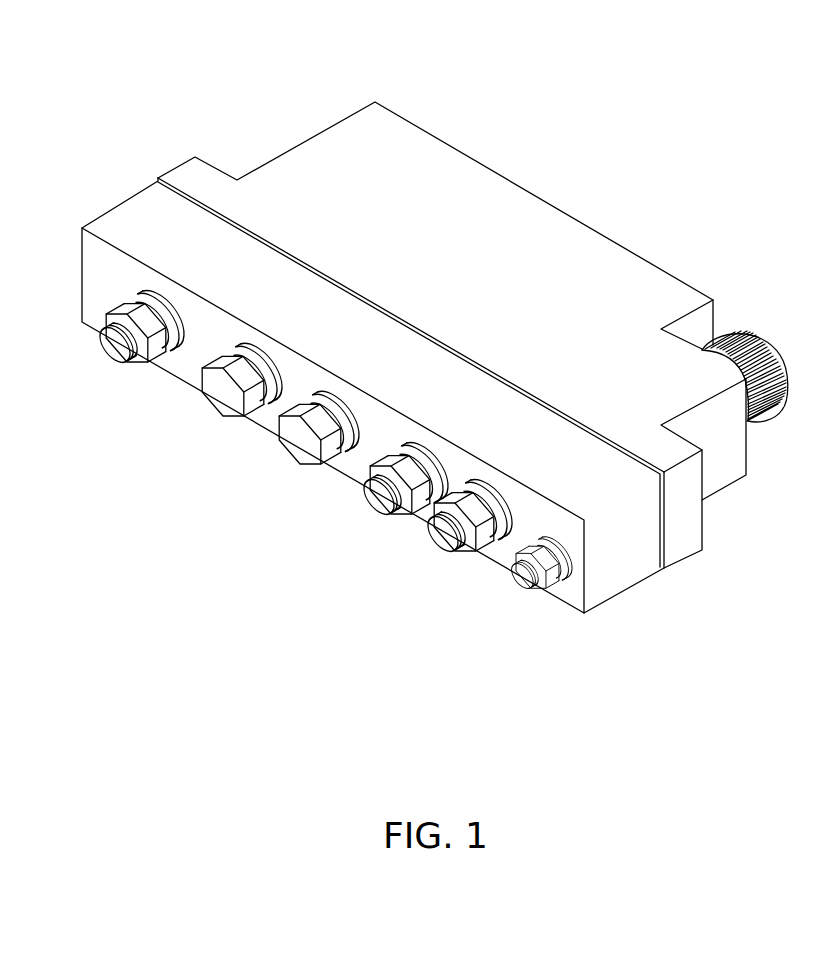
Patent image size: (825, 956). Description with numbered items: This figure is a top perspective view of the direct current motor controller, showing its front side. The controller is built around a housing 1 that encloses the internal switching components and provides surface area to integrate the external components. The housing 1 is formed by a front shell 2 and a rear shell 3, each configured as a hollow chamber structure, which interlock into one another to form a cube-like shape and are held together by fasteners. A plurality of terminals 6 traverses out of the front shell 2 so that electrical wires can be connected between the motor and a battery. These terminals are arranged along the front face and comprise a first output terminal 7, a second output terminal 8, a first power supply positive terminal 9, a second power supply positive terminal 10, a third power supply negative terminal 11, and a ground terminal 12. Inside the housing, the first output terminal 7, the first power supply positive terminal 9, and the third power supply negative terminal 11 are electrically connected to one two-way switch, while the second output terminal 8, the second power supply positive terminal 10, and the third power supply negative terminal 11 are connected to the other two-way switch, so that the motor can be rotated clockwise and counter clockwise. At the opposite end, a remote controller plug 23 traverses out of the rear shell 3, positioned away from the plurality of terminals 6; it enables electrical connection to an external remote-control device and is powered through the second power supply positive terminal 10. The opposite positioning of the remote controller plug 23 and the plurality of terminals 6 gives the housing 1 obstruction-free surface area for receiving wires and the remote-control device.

The housing 1 is at (425, 320).
The front shell 2 is at (118, 217).
The rear shell 3 is at (356, 118).
The plurality of terminals 6 is at (311, 450).
The first output terminal 7 is at (108, 345).
The second output terminal 8 is at (377, 497).
The first power supply positive terminal 9 is at (212, 398).
The second power supply positive terminal 10 is at (294, 447).
The third power supply negative terminal 11 is at (442, 531).
The ground terminal 12 is at (514, 578).
The remote controller plug 23 is at (747, 421).